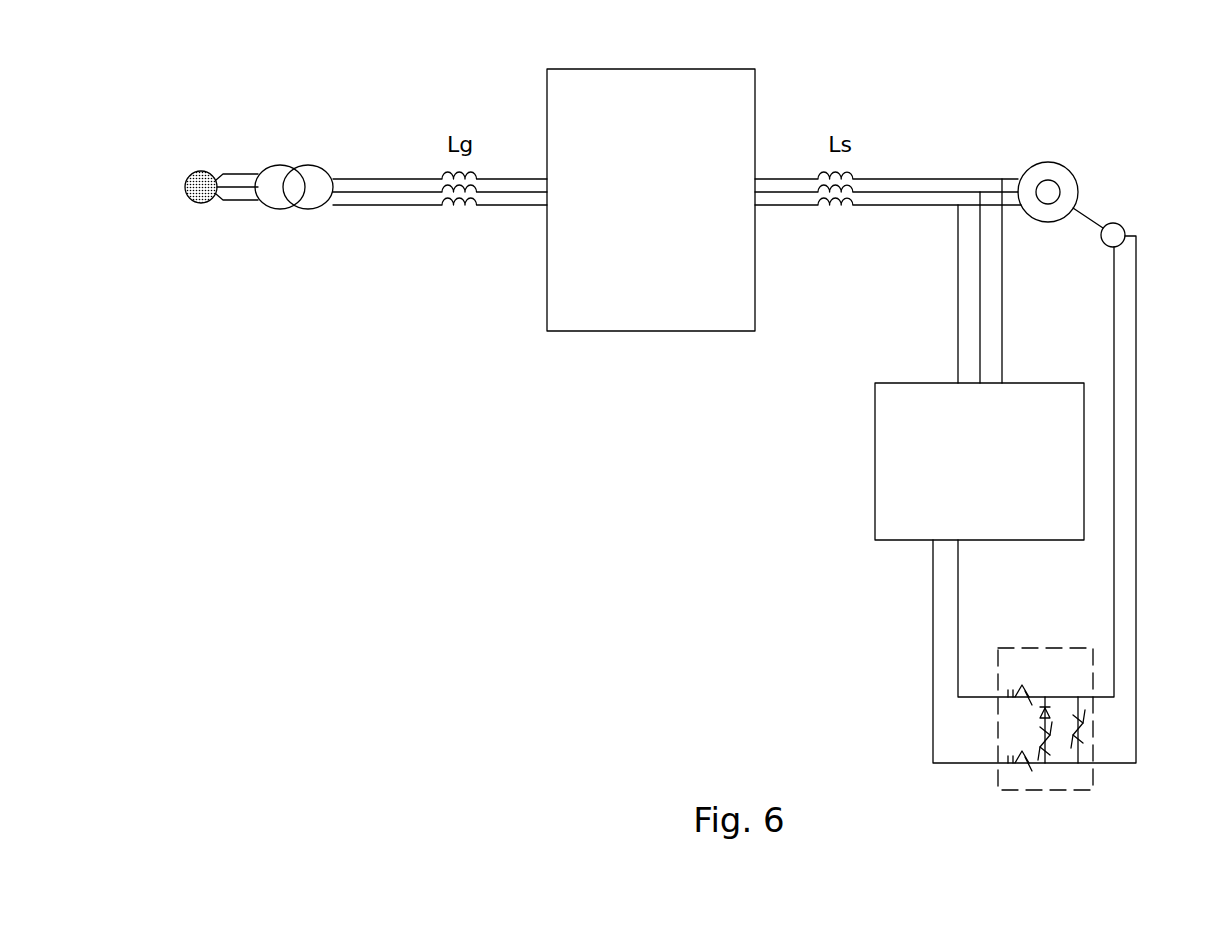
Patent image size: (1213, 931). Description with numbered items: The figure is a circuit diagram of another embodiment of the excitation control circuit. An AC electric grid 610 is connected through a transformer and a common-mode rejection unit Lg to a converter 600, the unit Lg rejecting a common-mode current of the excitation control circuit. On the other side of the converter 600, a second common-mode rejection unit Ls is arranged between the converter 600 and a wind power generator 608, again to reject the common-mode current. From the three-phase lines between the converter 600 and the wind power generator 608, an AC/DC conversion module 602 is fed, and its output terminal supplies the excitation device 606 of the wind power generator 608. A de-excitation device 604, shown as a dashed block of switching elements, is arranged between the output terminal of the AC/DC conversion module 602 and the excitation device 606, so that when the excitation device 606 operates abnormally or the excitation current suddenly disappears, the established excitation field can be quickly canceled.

The converter 600 is at (657, 69).
The AC/DC conversion module 602 is at (875, 458).
The de-excitation device 604 is at (1050, 648).
The excitation device 606 is at (1124, 222).
The wind power generator 608 is at (1050, 162).
The AC electric grid 610 is at (204, 172).